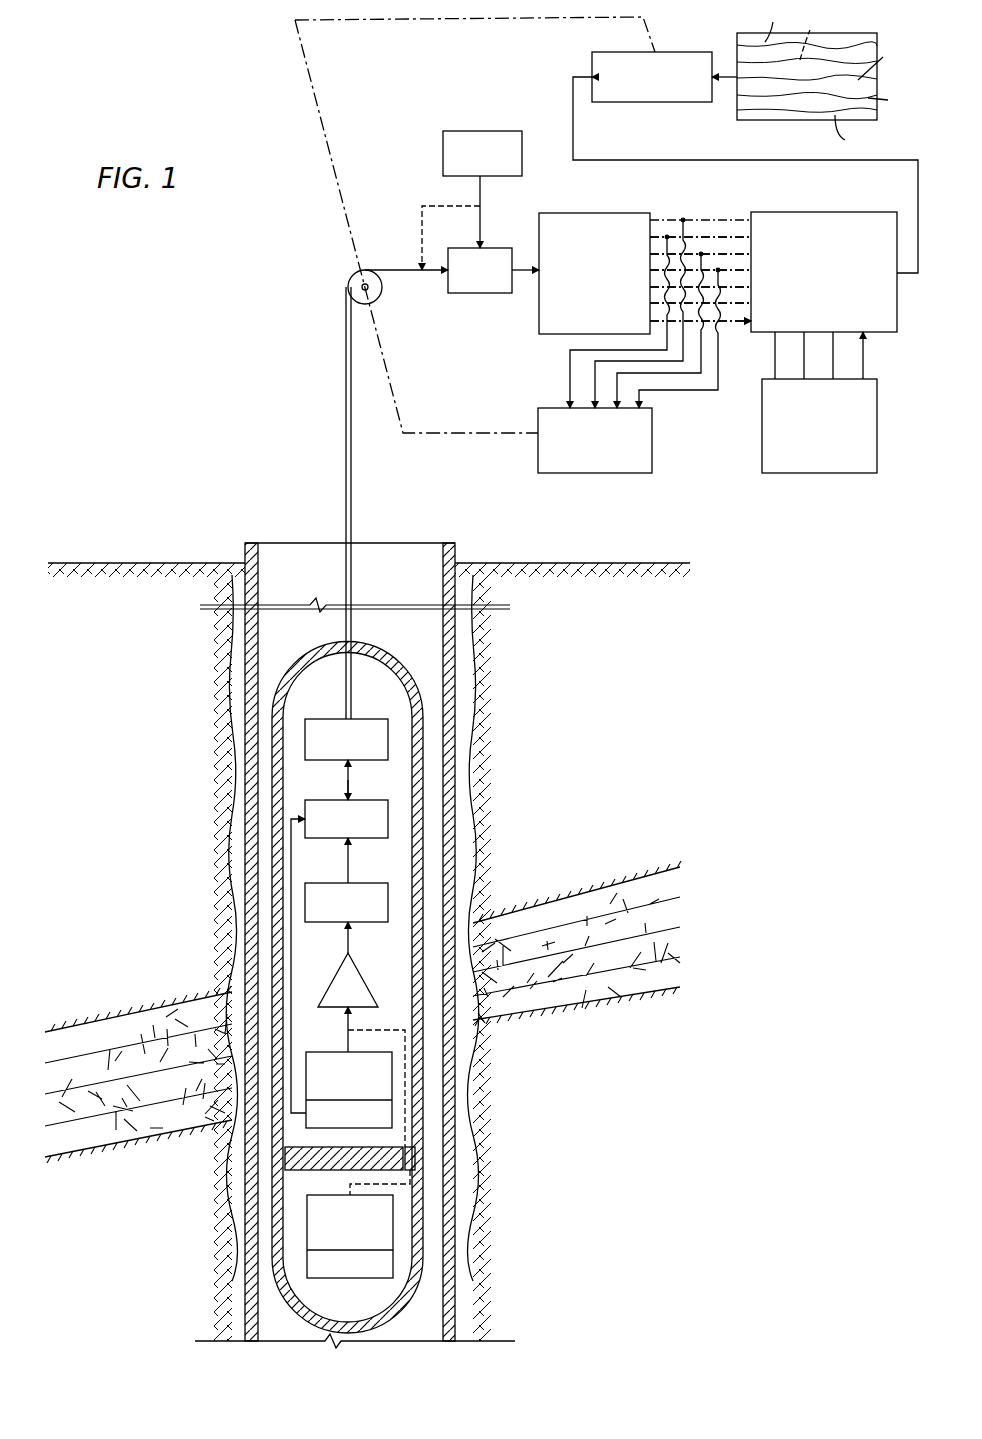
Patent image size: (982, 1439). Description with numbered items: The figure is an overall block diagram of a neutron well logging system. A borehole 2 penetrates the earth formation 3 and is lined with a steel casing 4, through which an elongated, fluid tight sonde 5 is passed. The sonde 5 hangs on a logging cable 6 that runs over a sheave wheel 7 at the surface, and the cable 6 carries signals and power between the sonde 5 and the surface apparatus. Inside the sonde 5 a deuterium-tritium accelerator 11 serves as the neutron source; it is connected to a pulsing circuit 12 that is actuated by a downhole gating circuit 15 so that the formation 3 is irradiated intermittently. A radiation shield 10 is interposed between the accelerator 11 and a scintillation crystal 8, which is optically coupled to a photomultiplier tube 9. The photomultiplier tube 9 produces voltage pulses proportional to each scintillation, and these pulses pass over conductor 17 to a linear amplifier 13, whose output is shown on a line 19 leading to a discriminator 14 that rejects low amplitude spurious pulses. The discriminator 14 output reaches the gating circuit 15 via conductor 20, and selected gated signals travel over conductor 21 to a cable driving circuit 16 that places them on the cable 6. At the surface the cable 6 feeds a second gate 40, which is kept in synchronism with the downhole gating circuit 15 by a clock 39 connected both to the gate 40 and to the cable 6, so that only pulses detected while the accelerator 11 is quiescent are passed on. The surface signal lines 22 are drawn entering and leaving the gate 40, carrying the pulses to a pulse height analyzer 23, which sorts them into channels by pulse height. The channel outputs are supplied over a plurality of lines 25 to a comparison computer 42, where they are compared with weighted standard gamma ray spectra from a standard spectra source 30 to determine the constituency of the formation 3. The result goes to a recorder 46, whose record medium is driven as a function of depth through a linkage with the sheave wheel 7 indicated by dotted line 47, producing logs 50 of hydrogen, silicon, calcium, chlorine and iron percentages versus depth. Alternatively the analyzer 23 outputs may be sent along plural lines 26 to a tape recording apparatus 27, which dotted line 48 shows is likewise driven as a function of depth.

The borehole 2 is at (237, 544).
The earth formation 3 is at (583, 1063).
The steel casing 4 is at (455, 797).
The sonde 5 is at (423, 718).
The logging cable 6 is at (352, 494).
The sheave wheel 7 is at (377, 297).
The radiation detector crystal 8 is at (350, 1278).
The photomultiplier tube 9 is at (393, 1228).
The radiation shield 10 is at (232, 1187).
The neutron source accelerator 11 is at (320, 1052).
The pulsing circuit 12 is at (392, 1112).
The linear amplifier 13 is at (368, 990).
The discriminator 14 is at (378, 922).
The gating circuit 15 is at (388, 828).
The cable driving circuit 16 is at (388, 748).
The conductor 17 is at (305, 1190).
The amplifier output line 19 is at (346, 940).
The conductor 20 is at (352, 860).
The conductor 21 is at (342, 783).
The signal conductor 22 is at (414, 268).
The pulse height analyzer 23 is at (598, 213).
The plurality of lines 25 is at (720, 262).
The plural lines 26 is at (617, 382).
The tape recording apparatus 27 is at (575, 473).
The standard spectra source 30 is at (845, 473).
The clock 39 is at (478, 131).
The second gate 40 is at (460, 293).
The comparison computer 42 is at (815, 212).
The recorder 46 is at (648, 102).
The dotted line 47 is at (413, 20).
The dotted line 48 is at (437, 433).
The logs 50 is at (745, 120).